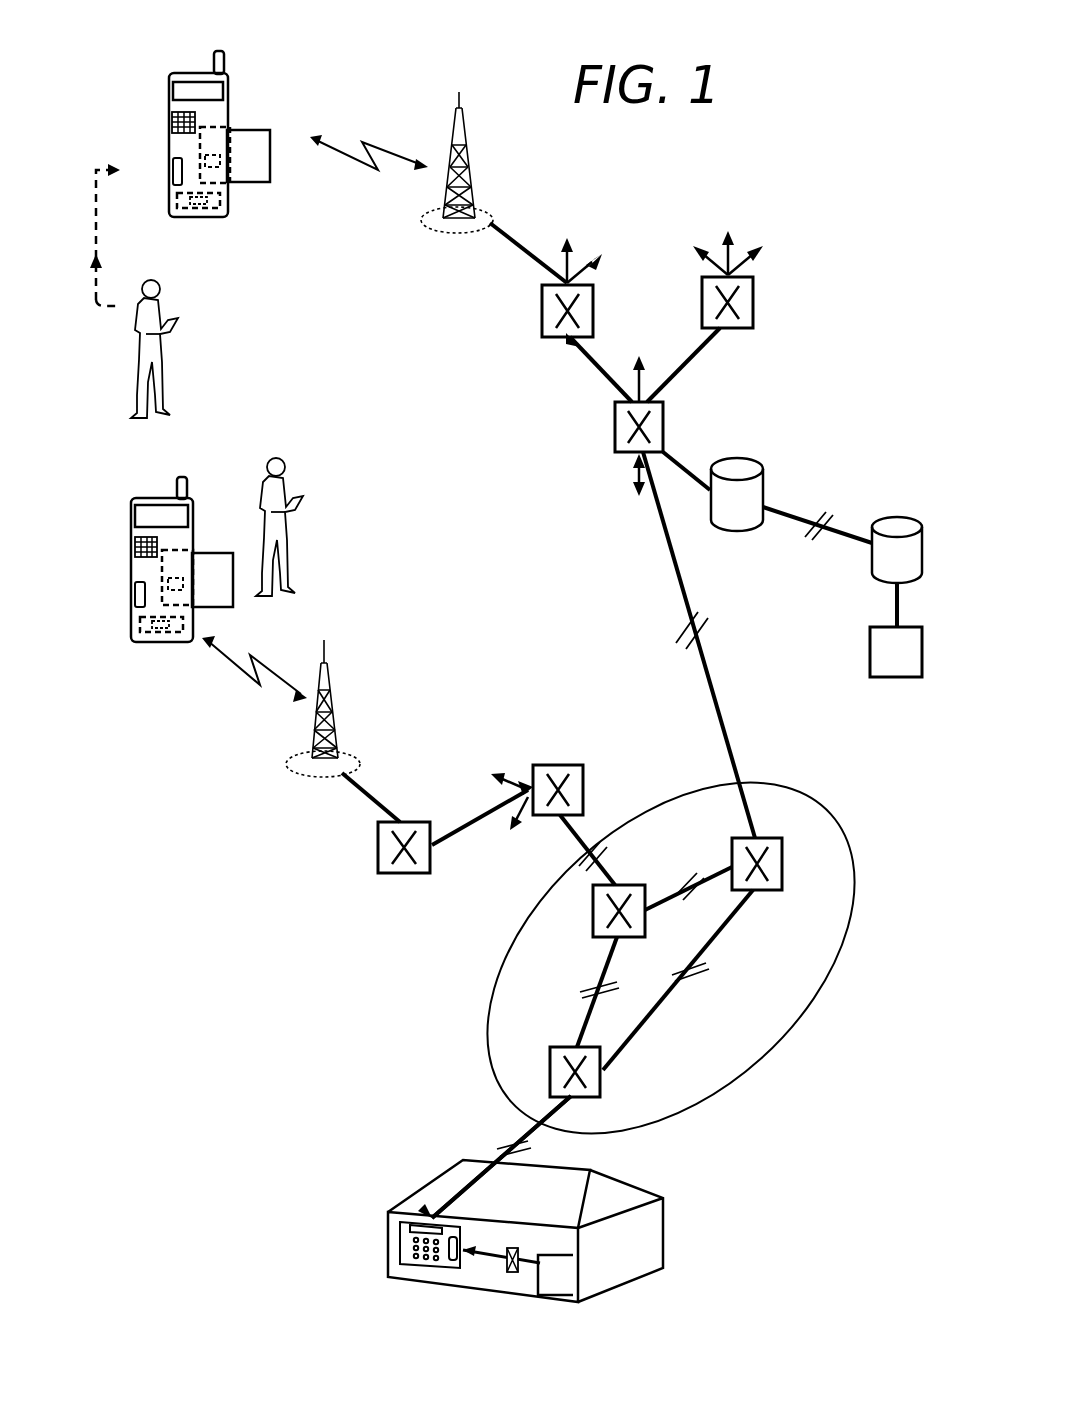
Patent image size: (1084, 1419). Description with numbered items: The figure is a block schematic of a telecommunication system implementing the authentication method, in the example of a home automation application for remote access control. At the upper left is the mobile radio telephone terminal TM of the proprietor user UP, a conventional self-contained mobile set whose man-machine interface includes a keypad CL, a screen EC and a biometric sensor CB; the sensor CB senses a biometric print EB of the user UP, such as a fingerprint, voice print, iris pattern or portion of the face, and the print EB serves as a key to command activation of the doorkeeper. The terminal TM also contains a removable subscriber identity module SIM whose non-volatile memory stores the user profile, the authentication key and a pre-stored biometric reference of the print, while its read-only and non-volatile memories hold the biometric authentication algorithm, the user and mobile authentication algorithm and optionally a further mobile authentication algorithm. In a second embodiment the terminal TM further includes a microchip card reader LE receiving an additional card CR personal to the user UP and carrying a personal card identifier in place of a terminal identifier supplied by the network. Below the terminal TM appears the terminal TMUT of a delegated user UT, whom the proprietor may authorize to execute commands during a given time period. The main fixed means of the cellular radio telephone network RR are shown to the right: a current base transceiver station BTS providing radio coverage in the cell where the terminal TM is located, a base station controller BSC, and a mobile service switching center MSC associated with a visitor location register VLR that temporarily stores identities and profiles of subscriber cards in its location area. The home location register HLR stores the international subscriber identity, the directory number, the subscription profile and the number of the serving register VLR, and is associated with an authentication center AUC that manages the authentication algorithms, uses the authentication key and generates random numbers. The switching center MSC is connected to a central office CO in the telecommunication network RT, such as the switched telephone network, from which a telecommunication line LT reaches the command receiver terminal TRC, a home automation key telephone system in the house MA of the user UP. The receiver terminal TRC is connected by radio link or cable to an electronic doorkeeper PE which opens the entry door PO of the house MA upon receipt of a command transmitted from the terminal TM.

The mobile radio telephone terminal TM is at (198, 75).
The screen EC is at (183, 83).
The keypad CL is at (172, 123).
The microchip card reader LE is at (213, 132).
The additional card CR is at (302, 137).
The biometric sensor CB is at (177, 172).
The subscriber identity module card SIM is at (197, 208).
The biometric print EB is at (101, 235).
The proprietor user UP is at (173, 349).
The terminal of delegated user TMUT is at (157, 505).
The delegated user UT is at (295, 525).
The base transceiver station BTS is at (462, 143).
The cellular radio telephone network RR is at (733, 183).
The base station controller BSC is at (552, 316).
The mobile service switching center MSC is at (622, 430).
The visitor location register VLR is at (740, 470).
The home location register HLR is at (880, 568).
The authentication center AUC is at (882, 667).
The telecommunication network RT is at (738, 1052).
The central office CO is at (600, 1080).
The telecommunication line LT is at (500, 1153).
The house MA is at (658, 1225).
The command receiver terminal TRC is at (402, 1238).
The electronic doorkeeper PE is at (507, 1267).
The entry door PO is at (567, 1280).